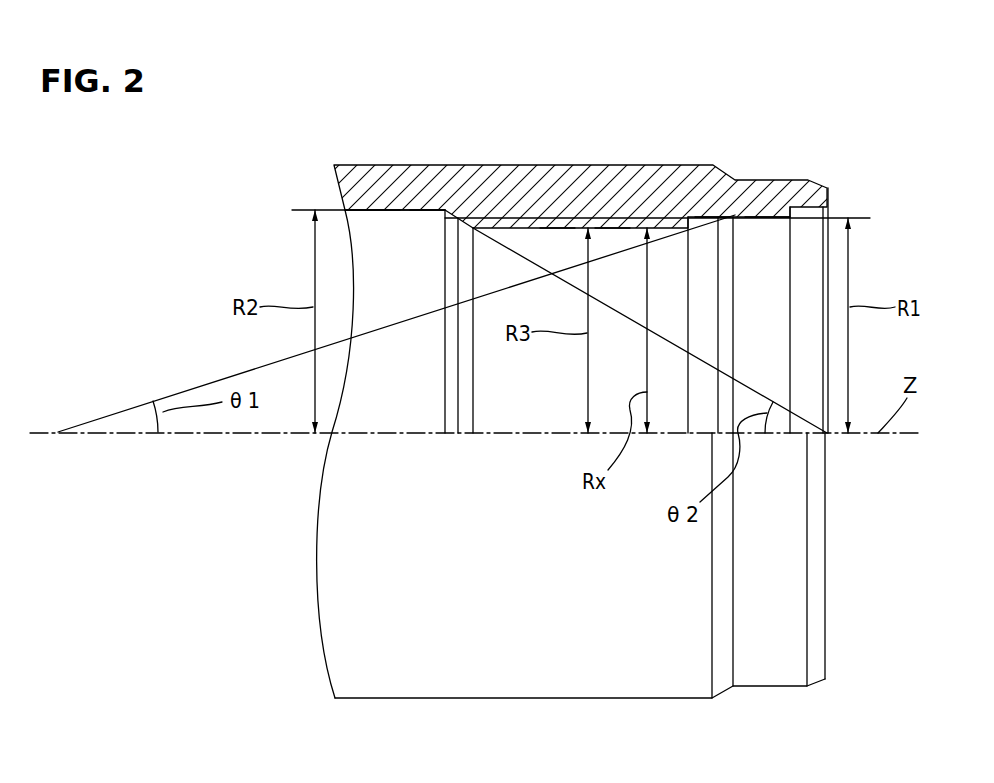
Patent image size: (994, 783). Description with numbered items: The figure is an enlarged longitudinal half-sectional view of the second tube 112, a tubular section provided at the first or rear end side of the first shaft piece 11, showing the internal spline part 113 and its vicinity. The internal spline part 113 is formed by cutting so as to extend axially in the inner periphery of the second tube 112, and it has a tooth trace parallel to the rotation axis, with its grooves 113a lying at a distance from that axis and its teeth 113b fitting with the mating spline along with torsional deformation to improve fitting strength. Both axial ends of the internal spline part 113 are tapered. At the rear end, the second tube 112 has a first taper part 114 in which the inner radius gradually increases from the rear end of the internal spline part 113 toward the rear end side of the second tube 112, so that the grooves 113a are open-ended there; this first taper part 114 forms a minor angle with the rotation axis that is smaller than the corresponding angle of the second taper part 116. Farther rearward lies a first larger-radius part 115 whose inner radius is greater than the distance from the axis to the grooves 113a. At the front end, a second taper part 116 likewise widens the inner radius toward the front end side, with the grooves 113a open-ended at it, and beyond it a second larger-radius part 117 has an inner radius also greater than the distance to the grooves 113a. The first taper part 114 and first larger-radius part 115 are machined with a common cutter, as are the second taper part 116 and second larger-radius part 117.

The first shaft piece 11 is at (560, 353).
The second tube 112 is at (513, 158).
The internal spline part 113 is at (642, 88).
The grooves 113a is at (622, 228).
The teeth 113b is at (568, 228).
The first taper part 114 is at (720, 219).
The first larger-radius part 115 is at (777, 219).
The second taper part 116 is at (447, 212).
The second larger-radius part 117 is at (382, 212).